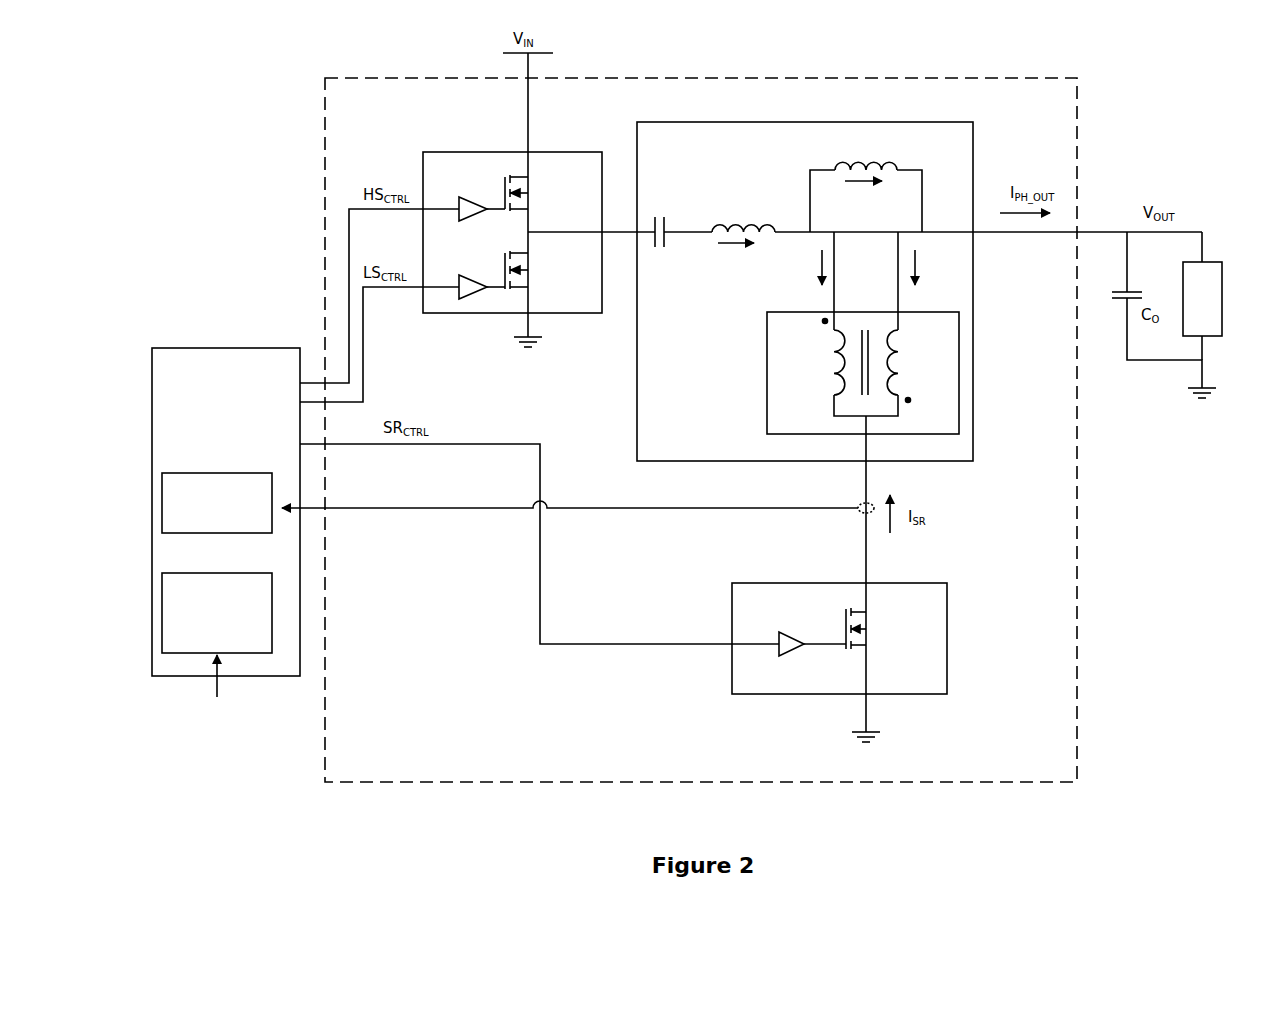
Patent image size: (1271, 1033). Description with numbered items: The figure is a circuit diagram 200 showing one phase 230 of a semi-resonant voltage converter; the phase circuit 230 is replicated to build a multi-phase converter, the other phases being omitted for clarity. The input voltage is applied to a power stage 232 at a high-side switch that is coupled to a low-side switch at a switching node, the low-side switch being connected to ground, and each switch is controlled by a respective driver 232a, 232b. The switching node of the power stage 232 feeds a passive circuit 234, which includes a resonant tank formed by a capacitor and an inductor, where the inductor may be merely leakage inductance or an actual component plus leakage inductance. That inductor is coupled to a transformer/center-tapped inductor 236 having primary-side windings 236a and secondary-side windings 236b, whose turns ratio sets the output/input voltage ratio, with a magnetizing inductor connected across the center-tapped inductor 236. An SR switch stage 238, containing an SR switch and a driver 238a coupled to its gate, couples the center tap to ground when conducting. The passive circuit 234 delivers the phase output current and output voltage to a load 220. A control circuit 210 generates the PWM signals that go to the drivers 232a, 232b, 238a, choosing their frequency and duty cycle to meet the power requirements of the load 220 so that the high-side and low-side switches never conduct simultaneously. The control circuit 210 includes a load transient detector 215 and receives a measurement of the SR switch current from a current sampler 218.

The circuit diagram 200 is at (208, 147).
The control circuit 210 is at (226, 527).
The load transient detector 215 is at (217, 599).
The current sampler 218 is at (217, 489).
The load 220 is at (1215, 296).
The phase circuit 230 is at (701, 418).
The power stage 232 is at (539, 235).
The driver 232a is at (474, 196).
The driver 232b is at (474, 274).
The passive circuit 234 is at (919, 352).
The transformer/center-tapped inductor 236 is at (863, 450).
The primary-side windings 236a is at (816, 357).
The secondary-side windings 236b is at (920, 366).
The SR switch stage 238 is at (839, 651).
The driver 238a is at (808, 629).